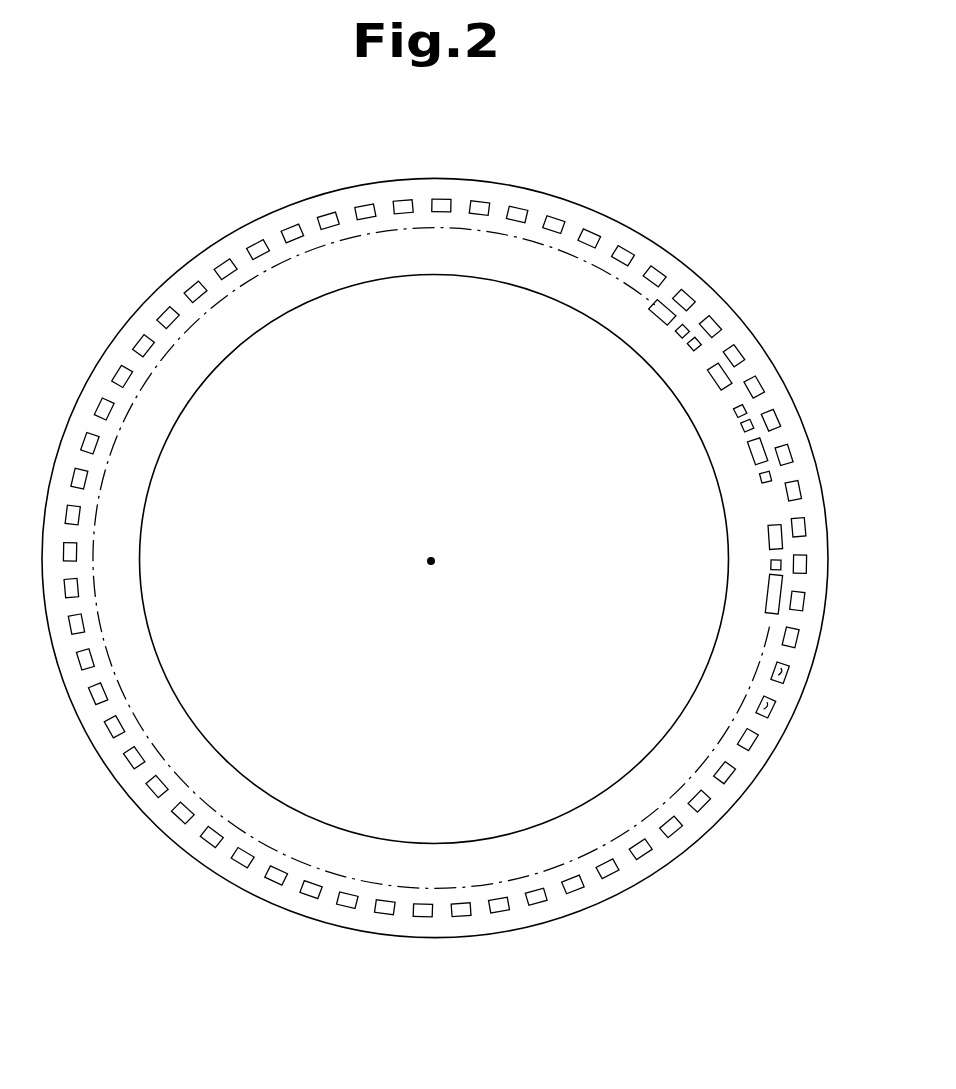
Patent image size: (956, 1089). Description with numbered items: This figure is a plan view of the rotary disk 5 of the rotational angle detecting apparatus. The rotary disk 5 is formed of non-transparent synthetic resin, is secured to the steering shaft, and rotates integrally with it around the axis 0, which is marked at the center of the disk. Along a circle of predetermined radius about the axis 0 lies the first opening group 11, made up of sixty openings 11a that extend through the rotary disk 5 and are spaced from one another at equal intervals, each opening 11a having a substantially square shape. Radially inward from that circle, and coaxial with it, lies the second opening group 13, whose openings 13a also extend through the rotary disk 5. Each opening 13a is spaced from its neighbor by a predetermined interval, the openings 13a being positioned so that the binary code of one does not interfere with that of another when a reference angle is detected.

The rotary disk 5 is at (717, 808).
The first opening group 11 is at (752, 746).
The openings 11a is at (779, 678).
The second opening group 13 is at (767, 590).
The openings 13a is at (761, 478).
The axis 0 is at (422, 576).